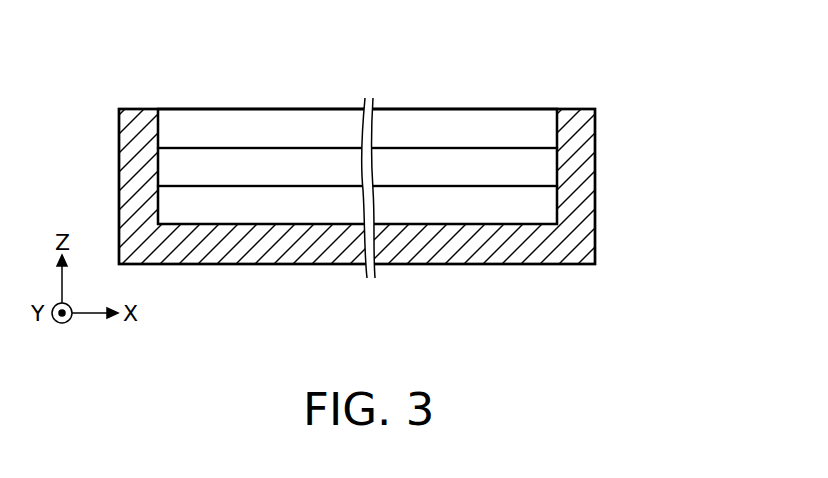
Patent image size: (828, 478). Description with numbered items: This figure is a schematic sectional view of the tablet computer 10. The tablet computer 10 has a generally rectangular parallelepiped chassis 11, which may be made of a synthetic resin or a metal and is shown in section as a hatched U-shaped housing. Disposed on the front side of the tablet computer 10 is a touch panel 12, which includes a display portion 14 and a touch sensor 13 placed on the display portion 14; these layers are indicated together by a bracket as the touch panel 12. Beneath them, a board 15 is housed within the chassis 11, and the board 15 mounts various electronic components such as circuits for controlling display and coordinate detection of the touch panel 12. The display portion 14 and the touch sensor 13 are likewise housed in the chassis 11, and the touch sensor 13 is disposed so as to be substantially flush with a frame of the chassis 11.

The tablet computer 10 is at (537, 77).
The chassis 11 is at (498, 252).
The touch panel 12 is at (662, 110).
The touch sensor 13 is at (540, 129).
The display portion 14 is at (540, 166).
The board 15 is at (540, 209).